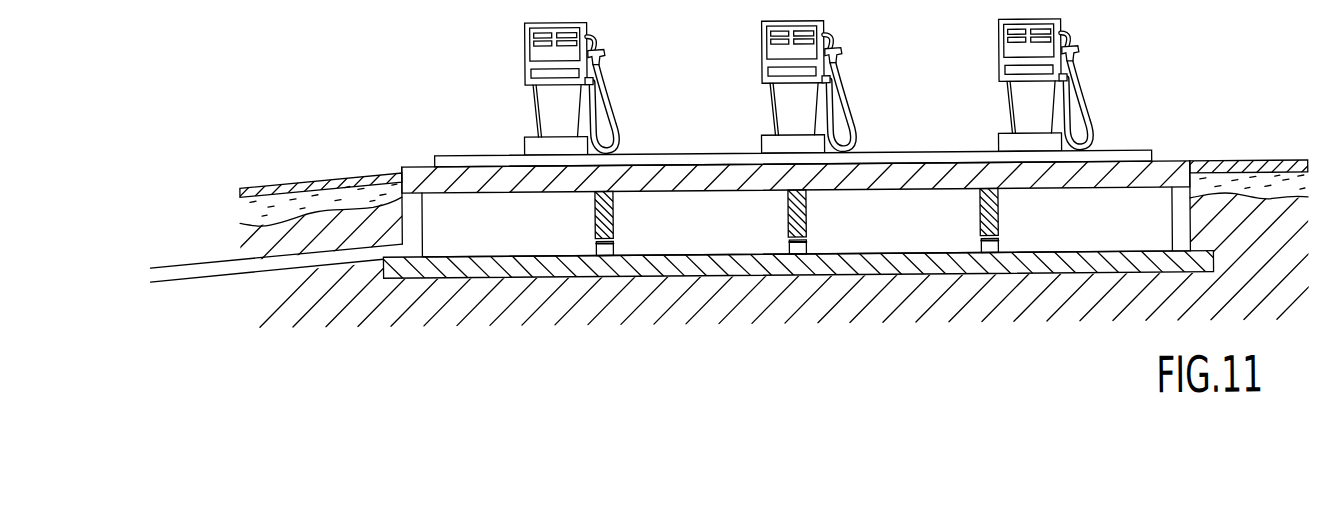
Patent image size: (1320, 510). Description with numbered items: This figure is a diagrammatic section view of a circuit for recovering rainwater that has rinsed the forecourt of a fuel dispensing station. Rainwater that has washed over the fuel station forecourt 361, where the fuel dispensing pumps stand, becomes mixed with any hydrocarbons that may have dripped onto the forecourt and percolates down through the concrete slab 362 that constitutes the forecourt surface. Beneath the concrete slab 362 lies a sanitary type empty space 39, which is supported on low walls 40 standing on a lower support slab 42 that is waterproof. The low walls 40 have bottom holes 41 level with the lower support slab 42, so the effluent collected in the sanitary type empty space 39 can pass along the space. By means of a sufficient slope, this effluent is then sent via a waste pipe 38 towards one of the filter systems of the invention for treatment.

The fuel station forecourt 361 is at (688, 150).
The concrete slab 362 is at (687, 189).
The waste pipe 38 is at (199, 258).
The sanitary type empty space 39 is at (920, 229).
The low walls 40 is at (810, 216).
The bottom holes 41 is at (599, 250).
The lower support slab 42 is at (774, 267).